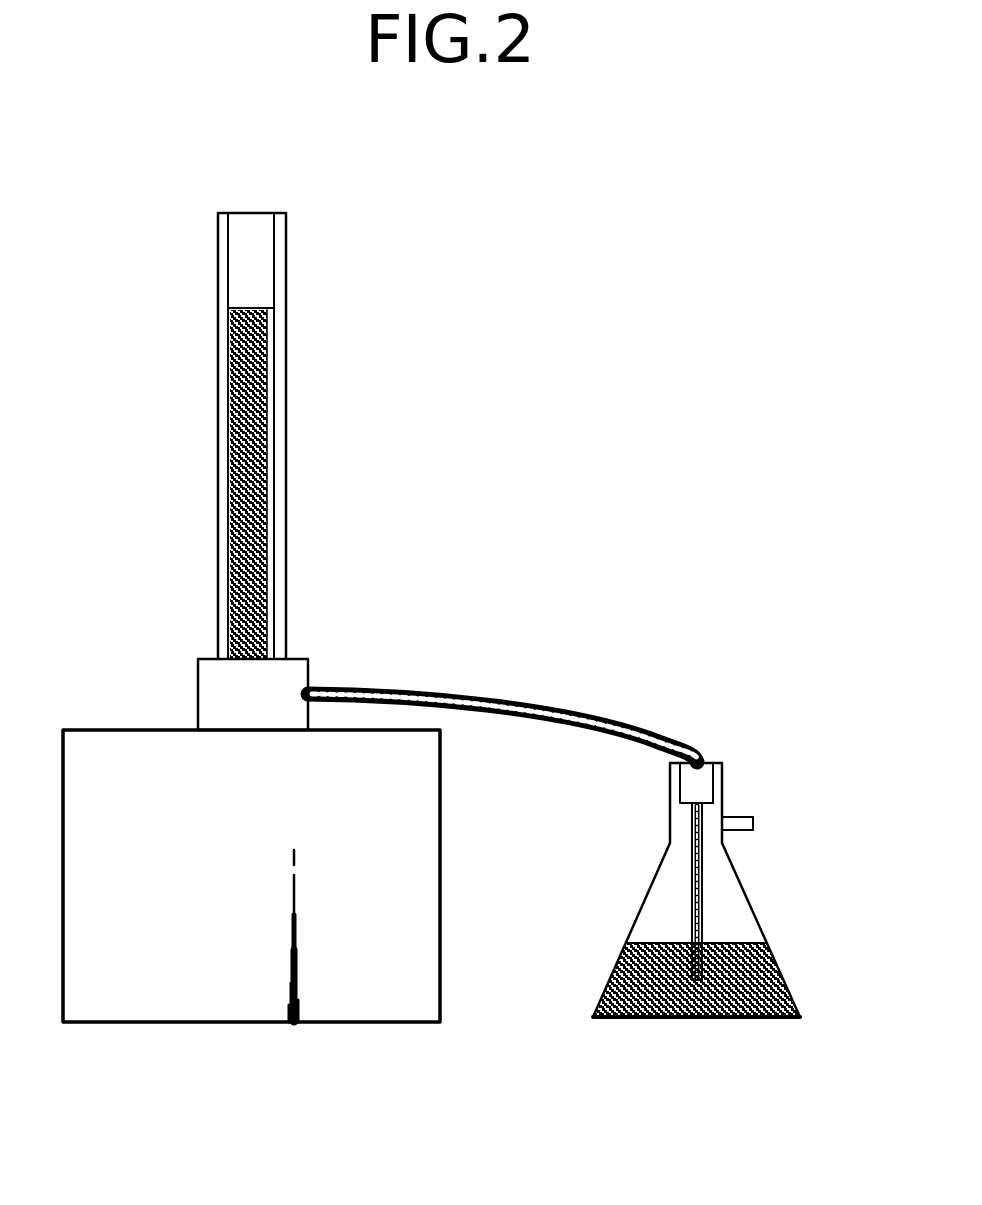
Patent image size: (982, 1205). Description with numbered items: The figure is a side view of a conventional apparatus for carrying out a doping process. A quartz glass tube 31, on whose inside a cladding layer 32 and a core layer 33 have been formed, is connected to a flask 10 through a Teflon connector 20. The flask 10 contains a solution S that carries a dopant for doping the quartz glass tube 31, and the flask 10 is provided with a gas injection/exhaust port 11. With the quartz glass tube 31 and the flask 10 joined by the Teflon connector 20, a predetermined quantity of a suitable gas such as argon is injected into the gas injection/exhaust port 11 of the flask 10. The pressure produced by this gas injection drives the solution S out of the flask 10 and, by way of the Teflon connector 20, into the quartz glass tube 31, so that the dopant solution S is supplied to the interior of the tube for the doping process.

The quartz glass tube 31 is at (278, 250).
The cladding layer 32 is at (283, 340).
The core layer 33 is at (283, 396).
The Teflon connector 20 is at (208, 690).
The flask 10 is at (738, 922).
The gas injection/exhaust port 11 is at (755, 822).
The solution S is at (780, 975).